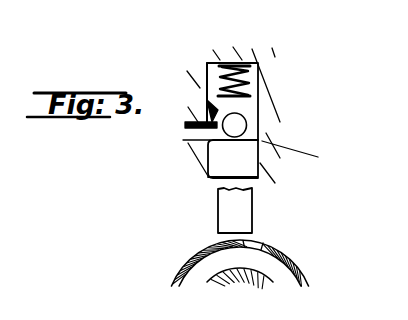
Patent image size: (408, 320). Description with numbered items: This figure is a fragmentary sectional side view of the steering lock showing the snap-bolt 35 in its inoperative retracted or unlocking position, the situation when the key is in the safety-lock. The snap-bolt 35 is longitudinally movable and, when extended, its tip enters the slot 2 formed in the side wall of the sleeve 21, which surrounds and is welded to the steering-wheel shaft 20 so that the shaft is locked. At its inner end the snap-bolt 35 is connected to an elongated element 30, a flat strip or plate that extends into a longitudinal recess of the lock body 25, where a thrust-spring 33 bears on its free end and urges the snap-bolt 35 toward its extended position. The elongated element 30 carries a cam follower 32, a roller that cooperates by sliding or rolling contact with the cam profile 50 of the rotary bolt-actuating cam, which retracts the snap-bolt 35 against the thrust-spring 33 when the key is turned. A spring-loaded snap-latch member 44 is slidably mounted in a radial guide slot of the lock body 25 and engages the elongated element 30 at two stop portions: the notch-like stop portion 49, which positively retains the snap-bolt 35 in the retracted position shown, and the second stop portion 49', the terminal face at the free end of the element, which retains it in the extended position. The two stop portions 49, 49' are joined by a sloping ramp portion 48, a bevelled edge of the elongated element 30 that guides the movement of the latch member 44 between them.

The lock body 25 is at (243, 57).
The thrust-spring 33 is at (248, 77).
The sloping ramp portion 48 is at (204, 98).
The second stop portion 49' is at (193, 73).
The snap-latch member 44 is at (167, 137).
The stop portion 49 is at (290, 96).
The cam follower 32 is at (243, 124).
The elongated element 30 is at (252, 166).
The cam profile 50 is at (284, 149).
The snap-bolt 35 is at (243, 207).
The sleeve 21 is at (297, 262).
The slot 2 is at (263, 250).
The steering-wheel shaft 20 is at (217, 273).